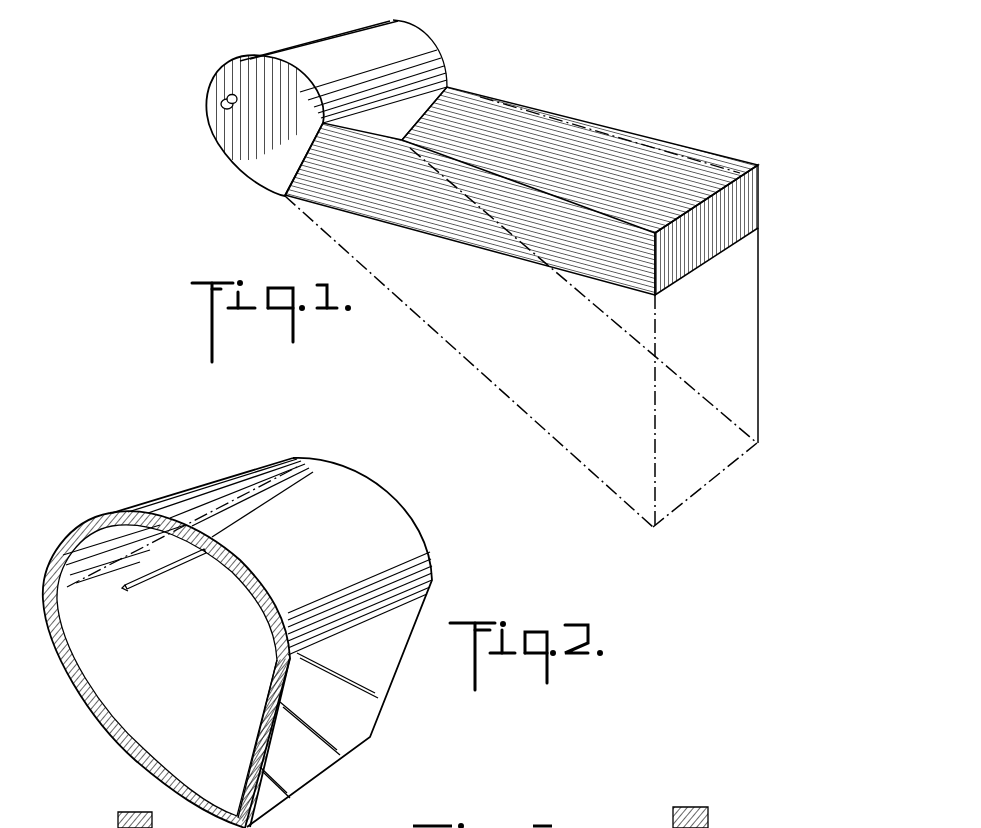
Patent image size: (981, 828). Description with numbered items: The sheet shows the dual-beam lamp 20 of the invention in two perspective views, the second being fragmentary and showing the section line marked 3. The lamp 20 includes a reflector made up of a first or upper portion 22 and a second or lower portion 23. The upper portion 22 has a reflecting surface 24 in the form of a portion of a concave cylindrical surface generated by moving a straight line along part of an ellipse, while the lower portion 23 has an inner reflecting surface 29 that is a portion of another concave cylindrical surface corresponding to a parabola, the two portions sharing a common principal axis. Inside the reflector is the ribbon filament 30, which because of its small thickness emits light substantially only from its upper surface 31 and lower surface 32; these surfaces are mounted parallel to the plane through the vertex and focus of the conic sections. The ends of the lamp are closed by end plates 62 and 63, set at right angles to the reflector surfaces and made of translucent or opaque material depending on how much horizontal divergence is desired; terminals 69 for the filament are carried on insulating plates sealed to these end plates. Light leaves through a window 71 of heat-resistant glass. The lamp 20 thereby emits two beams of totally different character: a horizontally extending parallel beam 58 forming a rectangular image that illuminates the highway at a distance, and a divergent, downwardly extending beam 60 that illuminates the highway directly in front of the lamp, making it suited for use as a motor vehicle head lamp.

In FIG. 1, the lamp 20 is at (193, 82).
In FIG. 2, the lamp 20 is at (173, 477).
In FIG. 1, the first or upper portion 22 is at (428, 53).
In FIG. 2, the first or upper portion 22 is at (352, 465).
In FIG. 1, the end plate 62 is at (255, 153).
In FIG. 2, the end plate 62 is at (118, 820).
In FIG. 1, the terminal 69 is at (226, 106).
In FIG. 1, the horizontally extending parallel beam 58 is at (733, 243).
In FIG. 1, the divergent and downwardly extending beam 60 is at (533, 420).
In FIG. 2, the section line 3- 3 is at (388, 481).
In FIG. 2, the second or lower portion 23 is at (130, 780).
In FIG. 2, the inner reflecting surface 29 is at (130, 708).
In FIG. 2, the reflecting surface 24 is at (257, 592).
In FIG. 2, the ribbon filament 30 is at (173, 573).
In FIG. 2, the upper surface 31 is at (123, 582).
In FIG. 2, the lower surface 32 is at (178, 578).
In FIG. 2, the end plate 63 is at (270, 618).
In FIG. 2, the window 71 is at (410, 600).